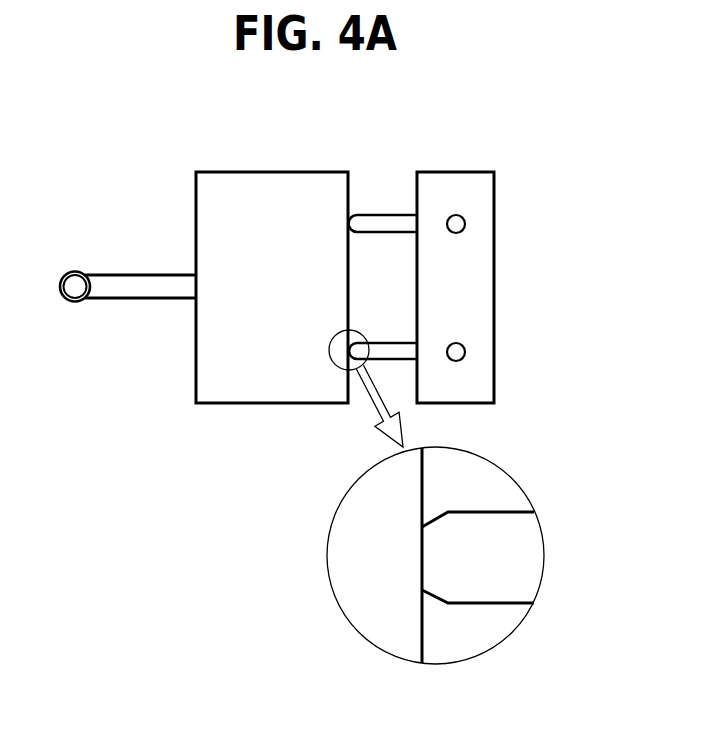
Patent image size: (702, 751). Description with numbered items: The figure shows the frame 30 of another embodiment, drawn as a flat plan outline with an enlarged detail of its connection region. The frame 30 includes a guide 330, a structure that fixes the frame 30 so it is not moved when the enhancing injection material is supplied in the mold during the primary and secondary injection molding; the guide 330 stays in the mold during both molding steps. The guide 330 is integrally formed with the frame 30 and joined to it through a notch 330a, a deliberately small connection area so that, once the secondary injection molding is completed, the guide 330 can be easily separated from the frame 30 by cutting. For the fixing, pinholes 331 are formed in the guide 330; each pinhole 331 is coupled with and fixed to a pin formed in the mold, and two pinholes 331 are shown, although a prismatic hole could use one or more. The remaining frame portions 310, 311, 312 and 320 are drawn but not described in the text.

The frame 30 is at (90, 175).
The antenna radiator 310 is at (117, 314).
The ring terminal 311 is at (72, 302).
The connection arm 312 is at (137, 275).
The antenna body plate 320 is at (256, 172).
The guide 330 is at (499, 265).
The pinhole 331 is at (459, 226).
The notch 330a is at (437, 598).